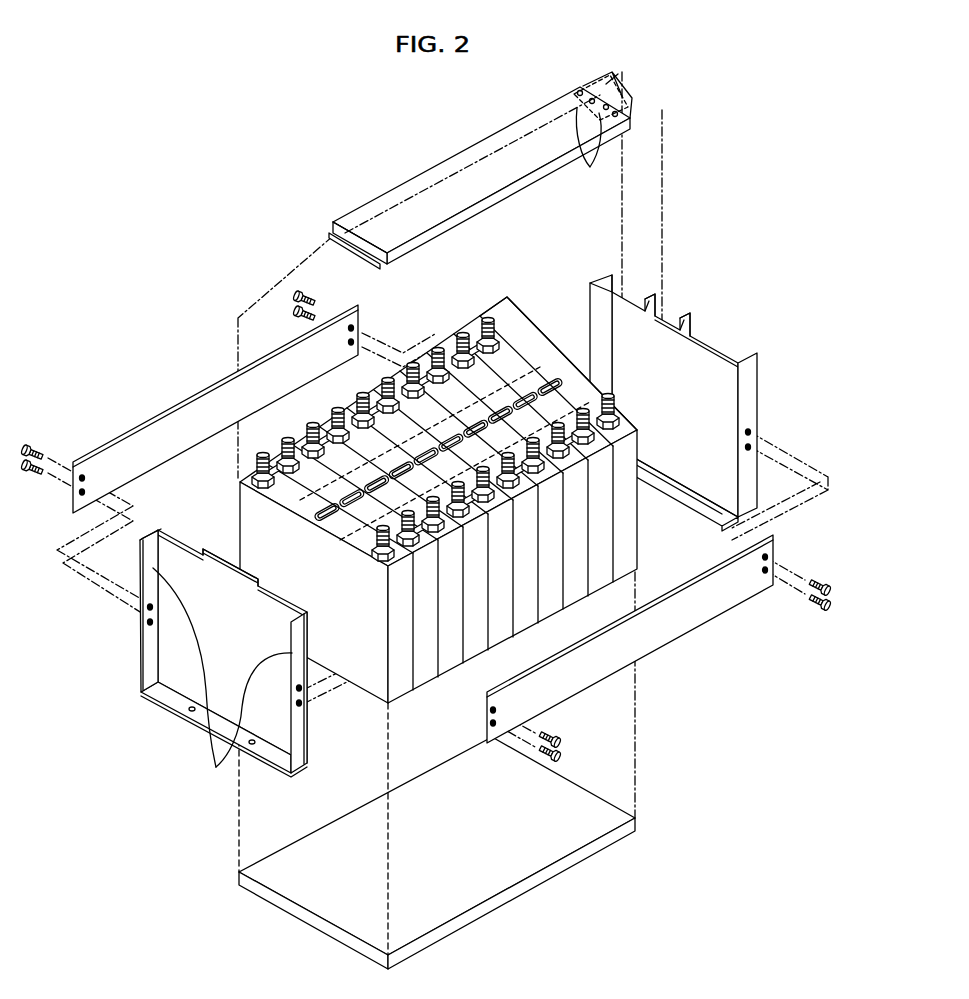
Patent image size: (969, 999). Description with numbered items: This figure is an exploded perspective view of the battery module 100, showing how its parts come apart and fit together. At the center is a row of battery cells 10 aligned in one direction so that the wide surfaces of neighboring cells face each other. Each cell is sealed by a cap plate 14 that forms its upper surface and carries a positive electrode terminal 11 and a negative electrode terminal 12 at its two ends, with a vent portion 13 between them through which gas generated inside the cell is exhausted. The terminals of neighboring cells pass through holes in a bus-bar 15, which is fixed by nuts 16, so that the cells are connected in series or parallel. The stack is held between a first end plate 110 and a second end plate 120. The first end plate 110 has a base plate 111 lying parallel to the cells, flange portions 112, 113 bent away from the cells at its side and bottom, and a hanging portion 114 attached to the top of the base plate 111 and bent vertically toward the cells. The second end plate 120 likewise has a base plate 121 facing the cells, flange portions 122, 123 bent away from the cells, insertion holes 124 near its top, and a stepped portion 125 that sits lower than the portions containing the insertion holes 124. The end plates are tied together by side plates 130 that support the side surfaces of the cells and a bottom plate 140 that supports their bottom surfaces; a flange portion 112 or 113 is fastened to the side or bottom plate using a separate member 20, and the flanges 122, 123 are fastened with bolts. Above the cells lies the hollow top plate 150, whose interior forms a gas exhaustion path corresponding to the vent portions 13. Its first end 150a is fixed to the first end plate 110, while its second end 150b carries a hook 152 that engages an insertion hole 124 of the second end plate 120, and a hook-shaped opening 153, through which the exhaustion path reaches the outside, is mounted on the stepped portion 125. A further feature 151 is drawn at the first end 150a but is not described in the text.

The battery module 100 is at (172, 292).
The battery cell 10 is at (458, 626).
The positive electrode terminal 11 is at (490, 326).
The negative electrode terminal 12 is at (612, 396).
The vent portion 13 is at (548, 388).
The cap plate 14 is at (518, 366).
The bus-bar 15 is at (268, 471).
The nut 16 is at (318, 446).
The separate member 20 is at (564, 754).
The first end plate 110 is at (138, 669).
The base plate 111 is at (194, 716).
The flange portion 112 is at (222, 678).
The flange portion 113 is at (165, 696).
The hanging portion 114 is at (216, 548).
The second end plate 120 is at (772, 383).
The base plate 121 is at (706, 357).
The flange portion 122 is at (602, 278).
The flange portion 123 is at (768, 520).
The insertion hole 124 is at (660, 302).
The stepped portion 125 is at (690, 320).
The side plate 130 is at (207, 382).
The bottom plate 140 is at (480, 935).
The top plate 150 is at (432, 162).
The first end 150a is at (331, 224).
The second end 150b is at (578, 90).
The bent portion 151 is at (340, 240).
The hook 152 is at (603, 118).
The opening 153 is at (636, 92).